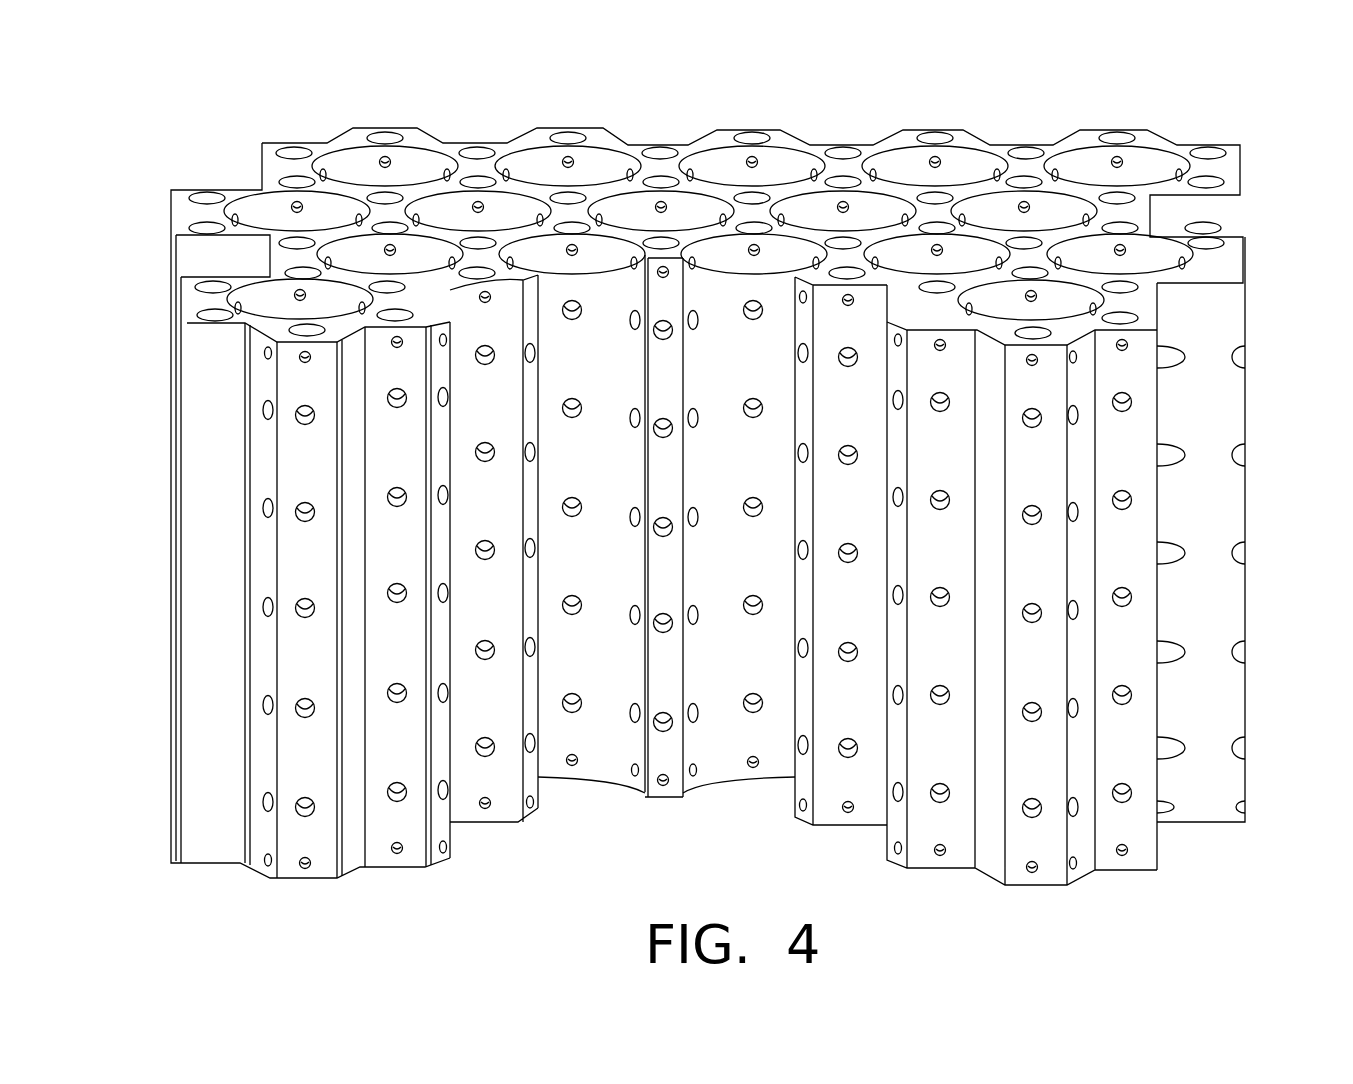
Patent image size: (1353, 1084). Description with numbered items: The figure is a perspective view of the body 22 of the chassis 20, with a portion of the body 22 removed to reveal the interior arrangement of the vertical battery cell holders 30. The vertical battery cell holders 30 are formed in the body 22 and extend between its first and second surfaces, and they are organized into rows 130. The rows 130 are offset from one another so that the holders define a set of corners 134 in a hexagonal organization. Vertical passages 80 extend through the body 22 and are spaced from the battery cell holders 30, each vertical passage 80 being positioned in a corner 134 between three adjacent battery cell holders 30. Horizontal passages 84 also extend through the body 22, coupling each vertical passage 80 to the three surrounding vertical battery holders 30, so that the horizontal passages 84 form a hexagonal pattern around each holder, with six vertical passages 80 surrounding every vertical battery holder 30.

The chassis 20 is at (1252, 160).
The body 22 is at (1220, 305).
The vertical battery cell holders 30 is at (438, 205).
The vertical passages 80 is at (570, 148).
The horizontal passages 84 is at (303, 513).
The rows 130 is at (276, 166).
The corners 134 is at (540, 192).